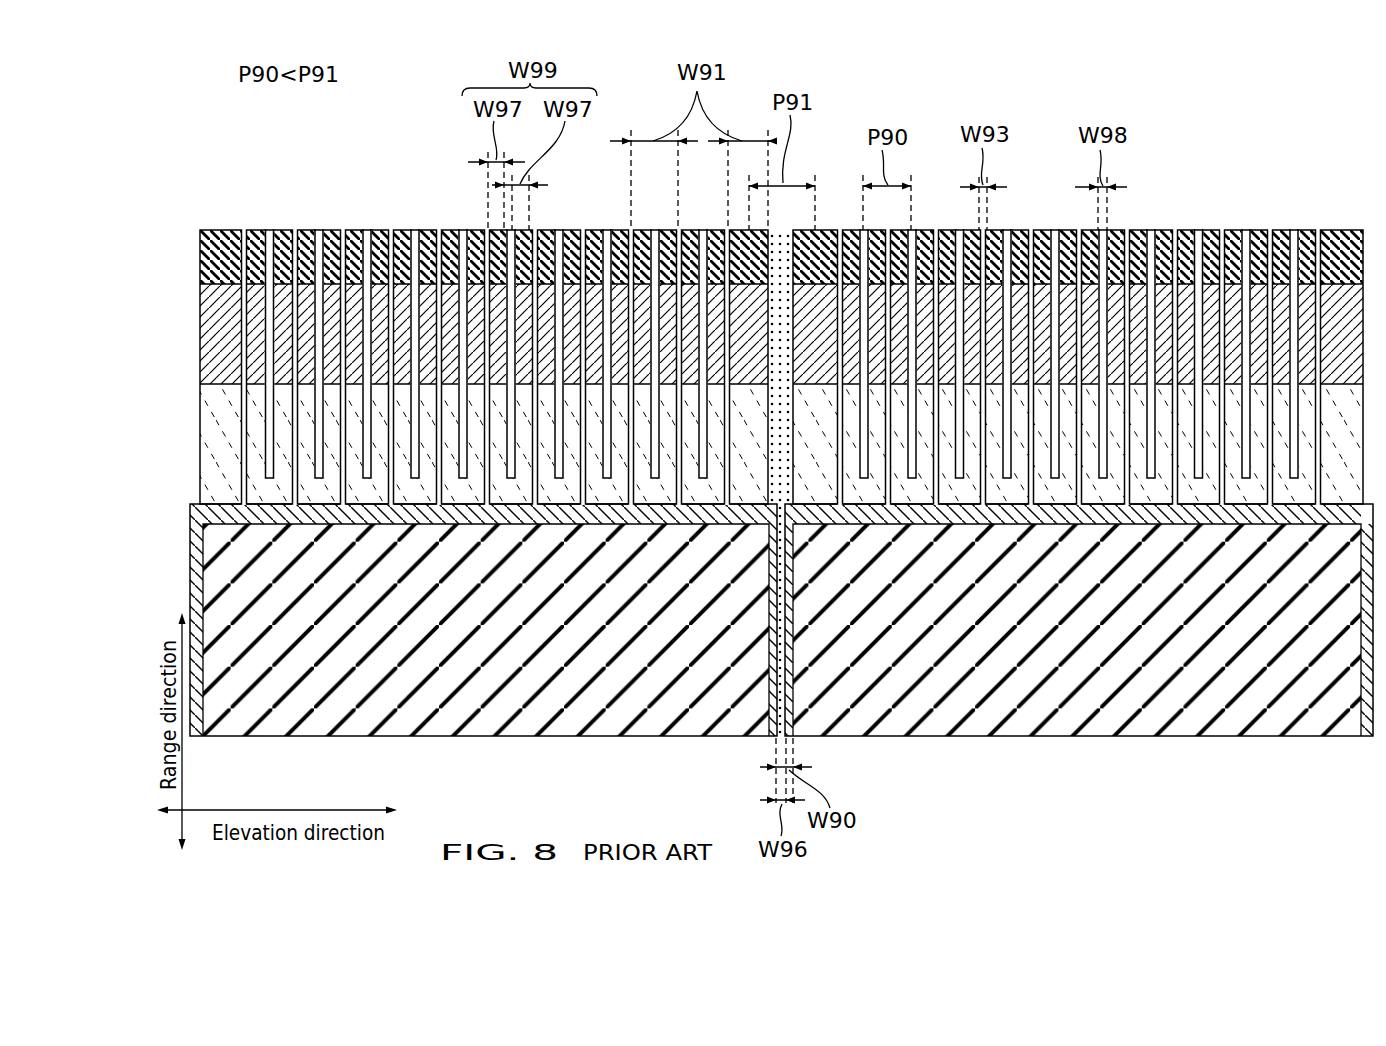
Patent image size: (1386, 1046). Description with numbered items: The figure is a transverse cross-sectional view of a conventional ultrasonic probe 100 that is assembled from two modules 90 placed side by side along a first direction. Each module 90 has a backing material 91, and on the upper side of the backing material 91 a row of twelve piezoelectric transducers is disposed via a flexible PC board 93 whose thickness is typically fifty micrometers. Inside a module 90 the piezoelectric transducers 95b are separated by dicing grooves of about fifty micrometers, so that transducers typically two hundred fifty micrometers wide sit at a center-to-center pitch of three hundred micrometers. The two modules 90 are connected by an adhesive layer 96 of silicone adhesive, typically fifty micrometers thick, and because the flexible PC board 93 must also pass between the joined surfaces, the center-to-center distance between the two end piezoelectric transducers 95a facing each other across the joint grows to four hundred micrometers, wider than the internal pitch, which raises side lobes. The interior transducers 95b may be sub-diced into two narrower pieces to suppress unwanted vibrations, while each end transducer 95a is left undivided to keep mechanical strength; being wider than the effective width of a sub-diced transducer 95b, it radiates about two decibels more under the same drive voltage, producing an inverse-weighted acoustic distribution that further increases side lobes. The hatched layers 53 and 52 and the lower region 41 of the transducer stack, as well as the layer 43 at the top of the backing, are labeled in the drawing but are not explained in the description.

The ultrasonic probe 100 is at (1284, 120).
The module 90 is at (793, 344).
The upper layer of radiating element 53 is at (1330, 231).
The intermediate layer of radiating element 52 is at (1363, 318).
The lower layer of radiating element 41 is at (1337, 508).
The backing material 91 is at (1195, 738).
The flexible PC board (FPC) 93 is at (364, 524).
The conductor layer 43 is at (1245, 524).
The piezoelectric transducer at module end 95a is at (730, 524).
The piezoelectric transducer inside module 95b is at (910, 524).
The adhesive layer 96 is at (768, 632).